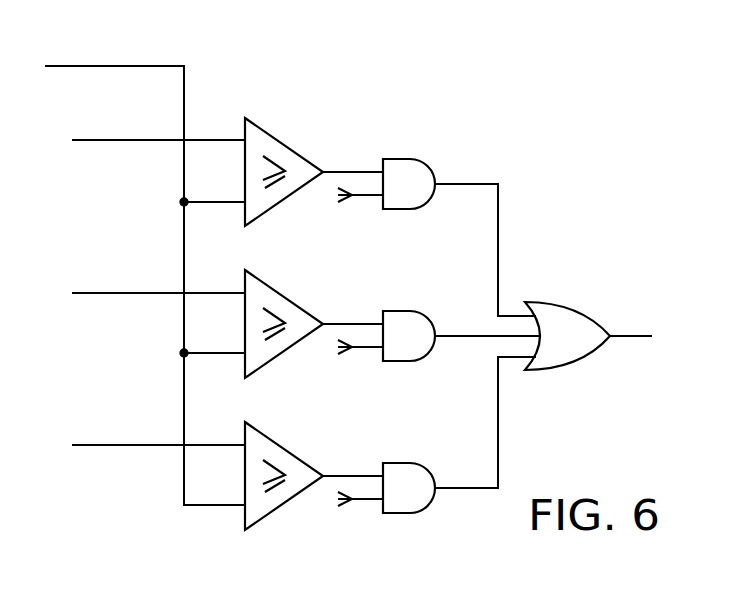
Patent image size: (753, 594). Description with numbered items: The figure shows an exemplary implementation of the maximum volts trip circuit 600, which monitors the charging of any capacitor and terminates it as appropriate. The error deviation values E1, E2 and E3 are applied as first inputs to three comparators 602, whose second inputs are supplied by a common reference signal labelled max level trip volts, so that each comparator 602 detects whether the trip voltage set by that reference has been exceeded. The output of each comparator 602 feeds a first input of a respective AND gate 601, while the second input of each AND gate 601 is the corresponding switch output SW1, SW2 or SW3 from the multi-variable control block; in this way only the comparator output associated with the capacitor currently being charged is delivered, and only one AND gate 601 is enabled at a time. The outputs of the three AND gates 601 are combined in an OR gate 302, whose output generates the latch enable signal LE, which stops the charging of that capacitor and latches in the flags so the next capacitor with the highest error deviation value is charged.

The maximum volts trip circuit 600 is at (503, 108).
The comparator 602 is at (286, 444).
The AND gate 601 is at (402, 159).
The OR gate 302 is at (544, 302).